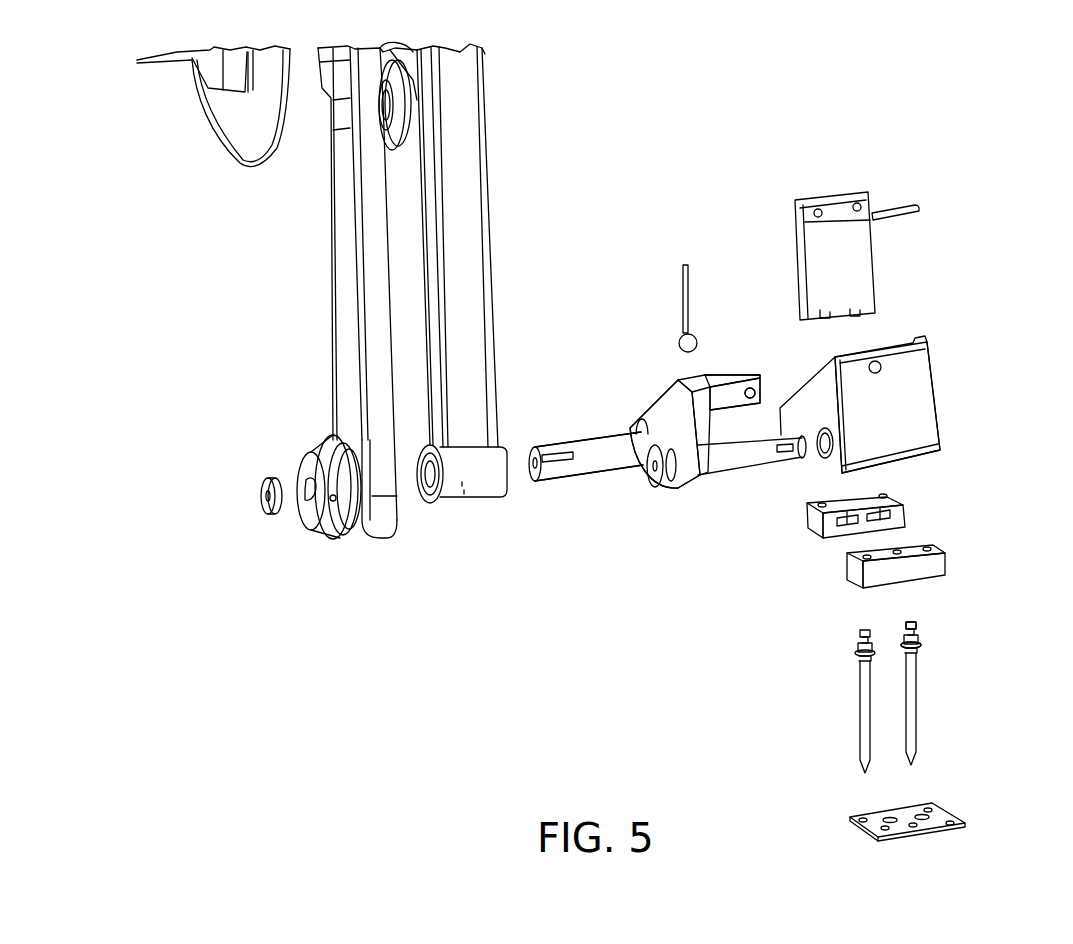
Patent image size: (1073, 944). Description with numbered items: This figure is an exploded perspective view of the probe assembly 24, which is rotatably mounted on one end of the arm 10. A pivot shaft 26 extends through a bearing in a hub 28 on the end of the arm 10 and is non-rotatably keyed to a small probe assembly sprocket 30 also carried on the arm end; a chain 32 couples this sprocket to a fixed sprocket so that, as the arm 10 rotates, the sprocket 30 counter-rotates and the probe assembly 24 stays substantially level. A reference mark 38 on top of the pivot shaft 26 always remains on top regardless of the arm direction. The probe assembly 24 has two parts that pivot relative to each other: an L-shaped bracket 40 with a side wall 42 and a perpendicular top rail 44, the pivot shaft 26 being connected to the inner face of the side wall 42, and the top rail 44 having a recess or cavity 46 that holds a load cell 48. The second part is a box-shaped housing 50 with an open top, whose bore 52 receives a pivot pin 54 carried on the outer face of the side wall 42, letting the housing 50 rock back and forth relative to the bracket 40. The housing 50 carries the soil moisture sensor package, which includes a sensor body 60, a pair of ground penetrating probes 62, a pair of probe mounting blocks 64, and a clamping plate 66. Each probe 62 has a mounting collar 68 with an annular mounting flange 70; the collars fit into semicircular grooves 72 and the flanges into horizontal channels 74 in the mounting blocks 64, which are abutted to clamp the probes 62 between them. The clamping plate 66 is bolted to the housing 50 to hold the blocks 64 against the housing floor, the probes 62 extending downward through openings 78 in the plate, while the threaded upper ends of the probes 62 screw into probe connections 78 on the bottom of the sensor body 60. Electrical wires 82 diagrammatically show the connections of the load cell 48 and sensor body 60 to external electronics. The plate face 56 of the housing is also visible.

The arm 10 is at (462, 238).
The chain 32 is at (331, 268).
The probe assembly sprocket 30 is at (324, 520).
The hub 28 is at (481, 490).
The pivot shaft 26 is at (588, 458).
The reference mark 38 is at (585, 443).
The L-shaped bracket 40 is at (654, 386).
The side wall 42 is at (677, 437).
The recess, slot or cavity 46 is at (715, 373).
The top rail 44 is at (740, 386).
The pivot pin 54 is at (727, 458).
The electrical wires 82 is at (687, 277).
The load cell 48 is at (693, 342).
The sensor body 60 is at (857, 247).
The openings / probe connections 78 is at (855, 310).
The probe assembly 24 is at (955, 290).
The box-shaped housing 50 is at (952, 371).
The bore 52 is at (818, 450).
The plate face 56 is at (908, 413).
The semicircular grooves 72 is at (880, 503).
The horizontal channel 74 is at (880, 516).
The probe mounting blocks 64 is at (933, 563).
The ground penetrating probes 62 is at (860, 697).
The mounting collar 68 is at (915, 633).
The mounting flange 70 is at (927, 644).
The clamping plate 66 is at (947, 810).